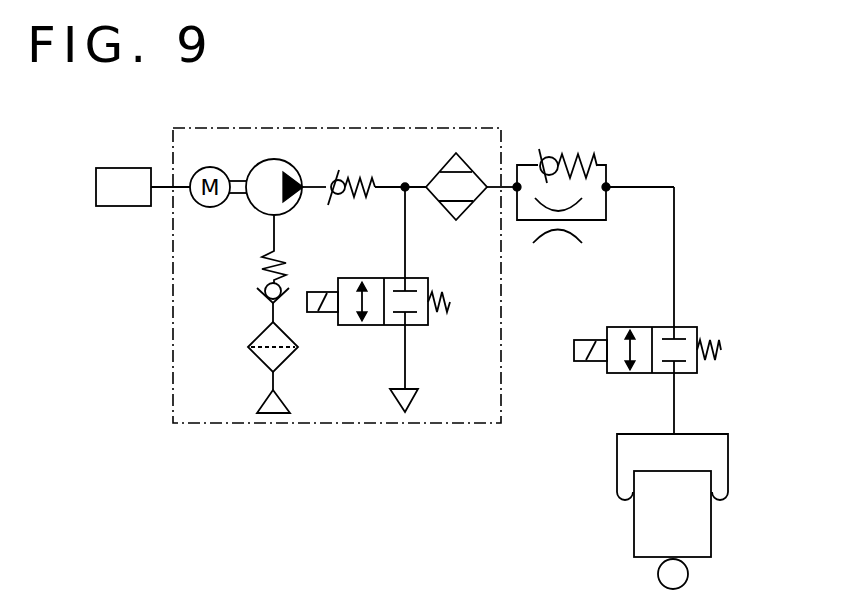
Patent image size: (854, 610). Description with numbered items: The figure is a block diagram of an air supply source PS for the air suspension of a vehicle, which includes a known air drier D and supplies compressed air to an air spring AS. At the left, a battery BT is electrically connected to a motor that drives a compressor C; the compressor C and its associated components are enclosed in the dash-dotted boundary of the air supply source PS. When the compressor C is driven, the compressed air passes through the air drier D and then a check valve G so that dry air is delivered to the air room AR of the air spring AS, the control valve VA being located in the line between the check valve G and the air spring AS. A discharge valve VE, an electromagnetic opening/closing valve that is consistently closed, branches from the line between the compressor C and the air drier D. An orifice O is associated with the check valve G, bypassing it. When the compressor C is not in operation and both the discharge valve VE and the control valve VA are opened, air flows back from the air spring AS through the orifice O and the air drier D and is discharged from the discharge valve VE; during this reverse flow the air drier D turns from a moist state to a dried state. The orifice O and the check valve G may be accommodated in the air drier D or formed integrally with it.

The battery BT is at (121, 168).
The compressor C is at (273, 158).
The air drier D is at (447, 152).
The check valve G is at (582, 155).
The orifice O is at (580, 225).
The discharge valve VE is at (416, 327).
The air supply source PS is at (343, 426).
The control valve VA is at (690, 327).
The air spring AS is at (703, 432).
The air room AR is at (728, 469).